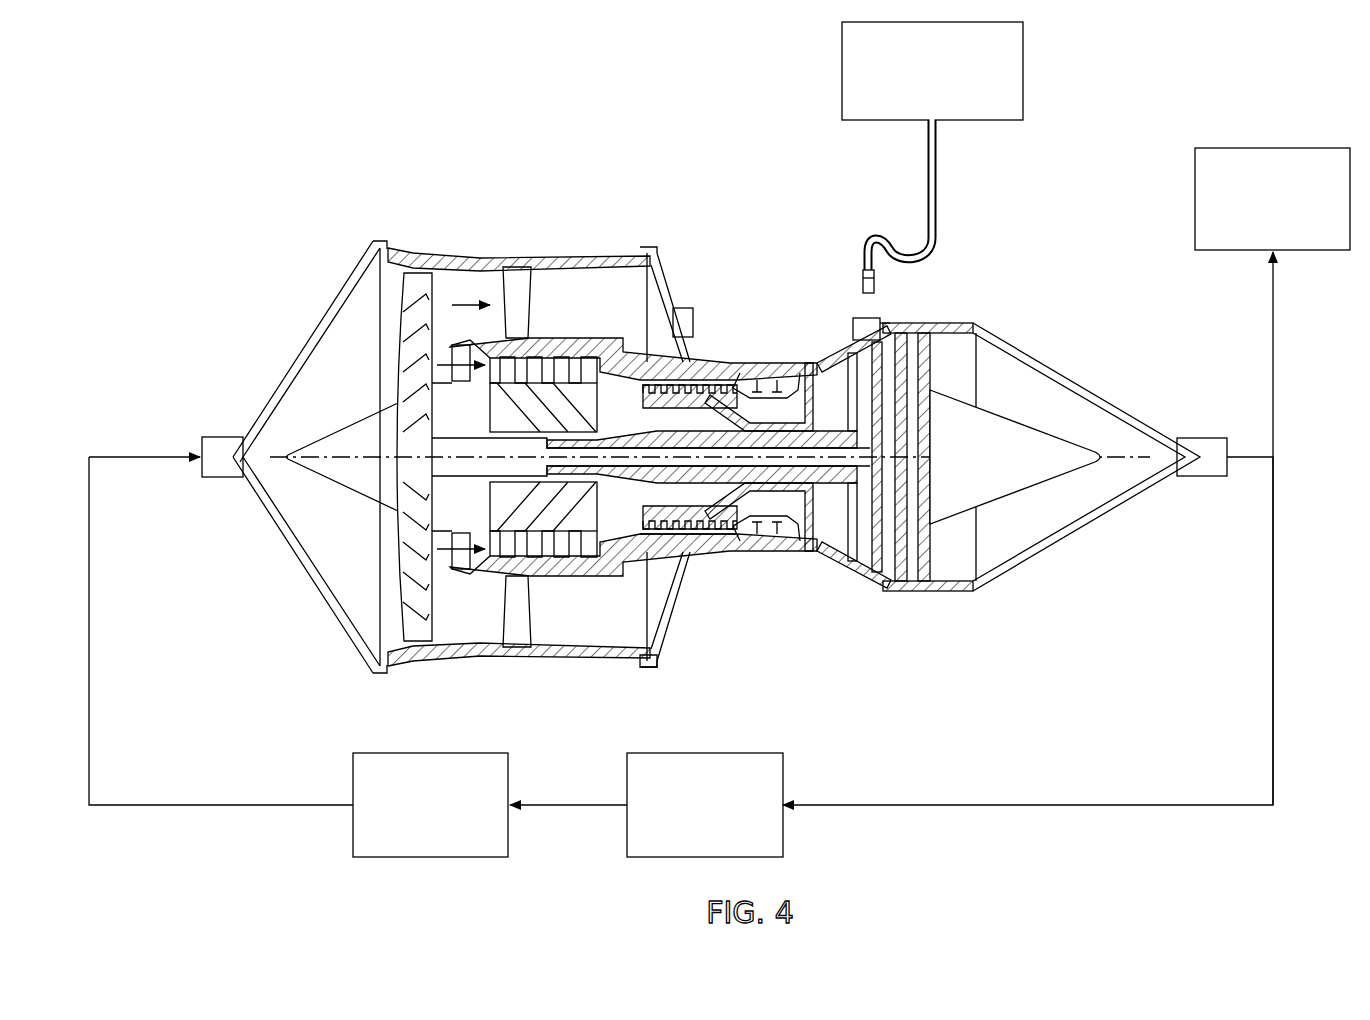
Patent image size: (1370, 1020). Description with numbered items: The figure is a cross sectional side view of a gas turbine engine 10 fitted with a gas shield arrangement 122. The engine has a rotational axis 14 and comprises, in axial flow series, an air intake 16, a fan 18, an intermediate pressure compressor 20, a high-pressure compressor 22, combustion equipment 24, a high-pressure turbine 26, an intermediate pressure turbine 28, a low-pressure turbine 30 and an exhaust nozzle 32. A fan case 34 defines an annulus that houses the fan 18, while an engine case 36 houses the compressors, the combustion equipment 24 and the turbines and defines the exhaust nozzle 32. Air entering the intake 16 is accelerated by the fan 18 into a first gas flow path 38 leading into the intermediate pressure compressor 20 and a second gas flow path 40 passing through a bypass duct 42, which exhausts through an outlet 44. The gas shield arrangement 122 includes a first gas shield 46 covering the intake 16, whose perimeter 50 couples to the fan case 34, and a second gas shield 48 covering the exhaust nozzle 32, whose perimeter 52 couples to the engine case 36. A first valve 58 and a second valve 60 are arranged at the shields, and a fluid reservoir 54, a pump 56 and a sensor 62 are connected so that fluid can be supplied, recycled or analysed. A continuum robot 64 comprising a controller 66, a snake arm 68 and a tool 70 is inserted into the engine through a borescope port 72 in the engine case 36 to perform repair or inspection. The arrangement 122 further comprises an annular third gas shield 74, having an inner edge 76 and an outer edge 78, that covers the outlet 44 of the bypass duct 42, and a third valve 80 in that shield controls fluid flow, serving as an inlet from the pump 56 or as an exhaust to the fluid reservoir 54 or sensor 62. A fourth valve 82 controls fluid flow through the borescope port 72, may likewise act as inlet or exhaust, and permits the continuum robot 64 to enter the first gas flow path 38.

The gas turbine engine 10 is at (740, 158).
The rotational axis 14 is at (372, 462).
The air intake 16 is at (385, 362).
The fan 18 is at (432, 654).
The intermediate pressure compressor 20 is at (560, 572).
The high-pressure compressor 22 is at (705, 365).
The combustion equipment 24 is at (772, 532).
The high-pressure turbine 26 is at (810, 553).
The intermediate pressure turbine 28 is at (845, 350).
The low-pressure turbine 30 is at (878, 572).
The exhaust nozzle 32 is at (968, 352).
The fan case 34 is at (553, 654).
The engine case 36 is at (950, 592).
The first gas flow path 38 is at (441, 383).
The second gas flow path 40 is at (462, 300).
The bypass duct 42 is at (578, 317).
The outlet 44 is at (645, 282).
The first gas shield 46 is at (243, 470).
The second gas shield 48 is at (1097, 520).
The perimeter 50 is at (383, 243).
The perimeter 52 is at (968, 325).
The fluid reservoir 54 is at (627, 839).
The pump 56 is at (353, 829).
The first valve 58 is at (220, 437).
The second valve 60 is at (1205, 440).
The sensor 62 is at (1200, 148).
The continuum robot 64 is at (990, 170).
The controller 66 is at (1025, 101).
The snake arm 68 is at (940, 205).
The tool 70 is at (862, 280).
The borescope port 72 is at (881, 326).
The third gas shield 74 is at (668, 285).
The inner edge 76 is at (692, 556).
The outer edge 78 is at (650, 668).
The third valve 80 is at (694, 315).
The fourth valve 82 is at (855, 320).
The gas shield arrangement 122 is at (165, 183).